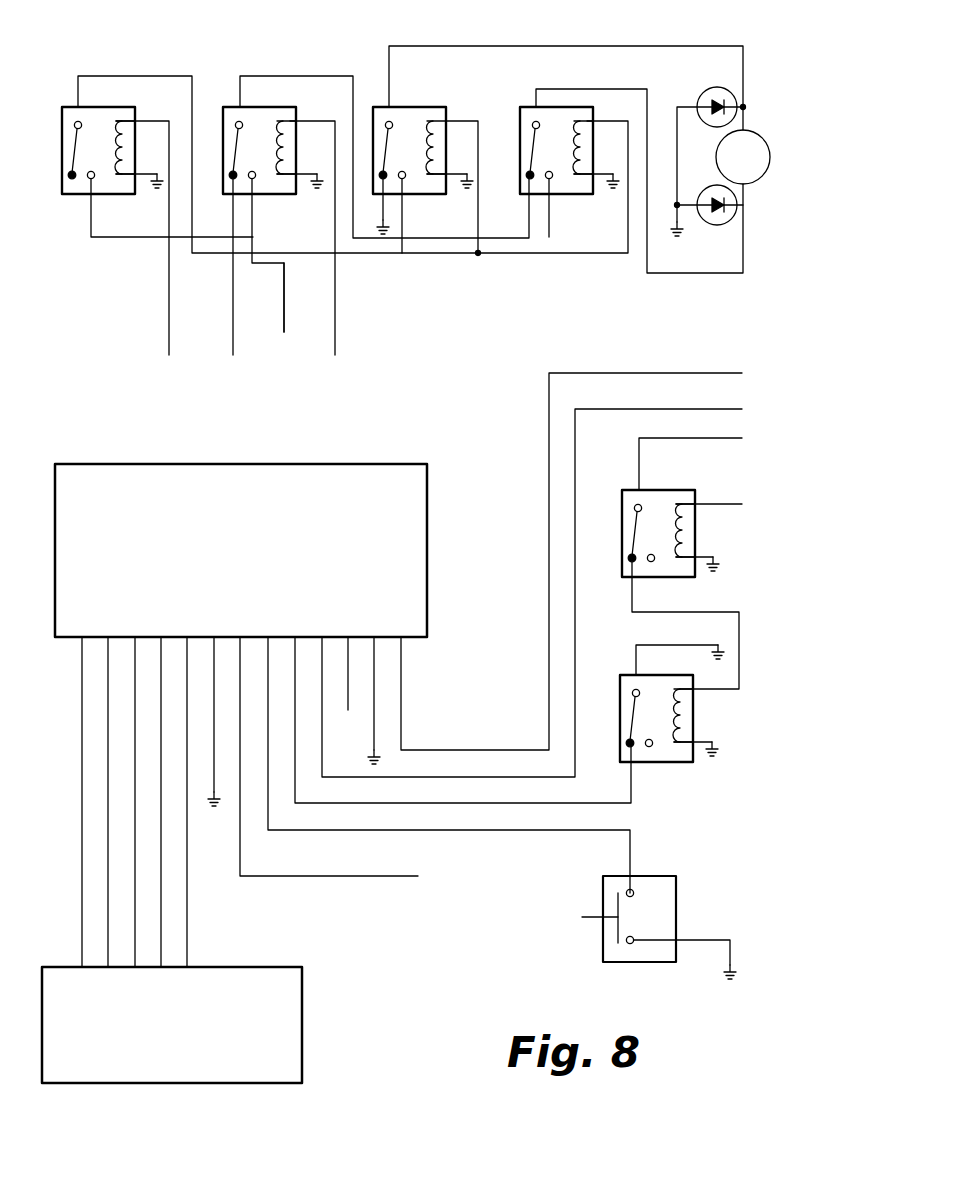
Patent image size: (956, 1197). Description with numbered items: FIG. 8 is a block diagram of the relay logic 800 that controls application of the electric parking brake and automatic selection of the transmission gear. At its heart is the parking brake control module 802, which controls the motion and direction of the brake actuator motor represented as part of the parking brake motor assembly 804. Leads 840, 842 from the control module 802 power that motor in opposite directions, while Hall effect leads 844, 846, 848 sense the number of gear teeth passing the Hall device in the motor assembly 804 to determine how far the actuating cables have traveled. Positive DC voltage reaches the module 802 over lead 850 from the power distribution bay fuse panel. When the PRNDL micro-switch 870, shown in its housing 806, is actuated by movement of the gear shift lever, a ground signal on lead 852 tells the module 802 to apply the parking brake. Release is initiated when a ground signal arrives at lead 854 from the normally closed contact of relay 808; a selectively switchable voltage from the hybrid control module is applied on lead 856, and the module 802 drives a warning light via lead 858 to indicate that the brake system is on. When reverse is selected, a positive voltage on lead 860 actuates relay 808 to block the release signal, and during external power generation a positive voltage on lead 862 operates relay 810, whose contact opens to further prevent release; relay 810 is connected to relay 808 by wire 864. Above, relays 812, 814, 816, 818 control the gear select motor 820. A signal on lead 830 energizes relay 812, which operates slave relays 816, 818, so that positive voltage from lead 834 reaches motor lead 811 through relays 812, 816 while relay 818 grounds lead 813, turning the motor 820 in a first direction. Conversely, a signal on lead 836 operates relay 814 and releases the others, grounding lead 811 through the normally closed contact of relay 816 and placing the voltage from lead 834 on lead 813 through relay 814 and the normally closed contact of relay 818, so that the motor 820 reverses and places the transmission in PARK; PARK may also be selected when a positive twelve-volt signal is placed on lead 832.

The parking brake system circuit 800 is at (86, 440).
The parking brake control module 802 is at (427, 548).
The parking brake motor assembly 804 is at (302, 1028).
The PRNDL microswitch 806 is at (676, 905).
The relay 808 is at (680, 762).
The relay 810 is at (668, 490).
The lead 811 is at (693, 46).
The relay 812 is at (118, 107).
The lead 813 is at (693, 273).
The relay 814 is at (272, 107).
The slave relay 816 is at (408, 107).
The slave relay 818 is at (553, 107).
The gear select motor 820 is at (770, 155).
The lead 830 is at (169, 337).
The lead 832 is at (232, 337).
The lead 834 is at (287, 272).
The lead 836 is at (334, 337).
The lead 840 is at (82, 835).
The lead 842 is at (108, 738).
The Hall effect lead 844 is at (135, 685).
The Hall effect lead 846 is at (161, 883).
The Hall effect lead 848 is at (187, 922).
The lead 850 is at (392, 878).
The lead 852 is at (522, 830).
The lead 854 is at (565, 803).
The lead 856 is at (575, 578).
The lead 858 is at (583, 373).
The lead 860 is at (665, 438).
The lead 862 is at (705, 504).
The relay connection lead 864 is at (740, 650).
The PRNDL micro-switch 870 is at (593, 920).